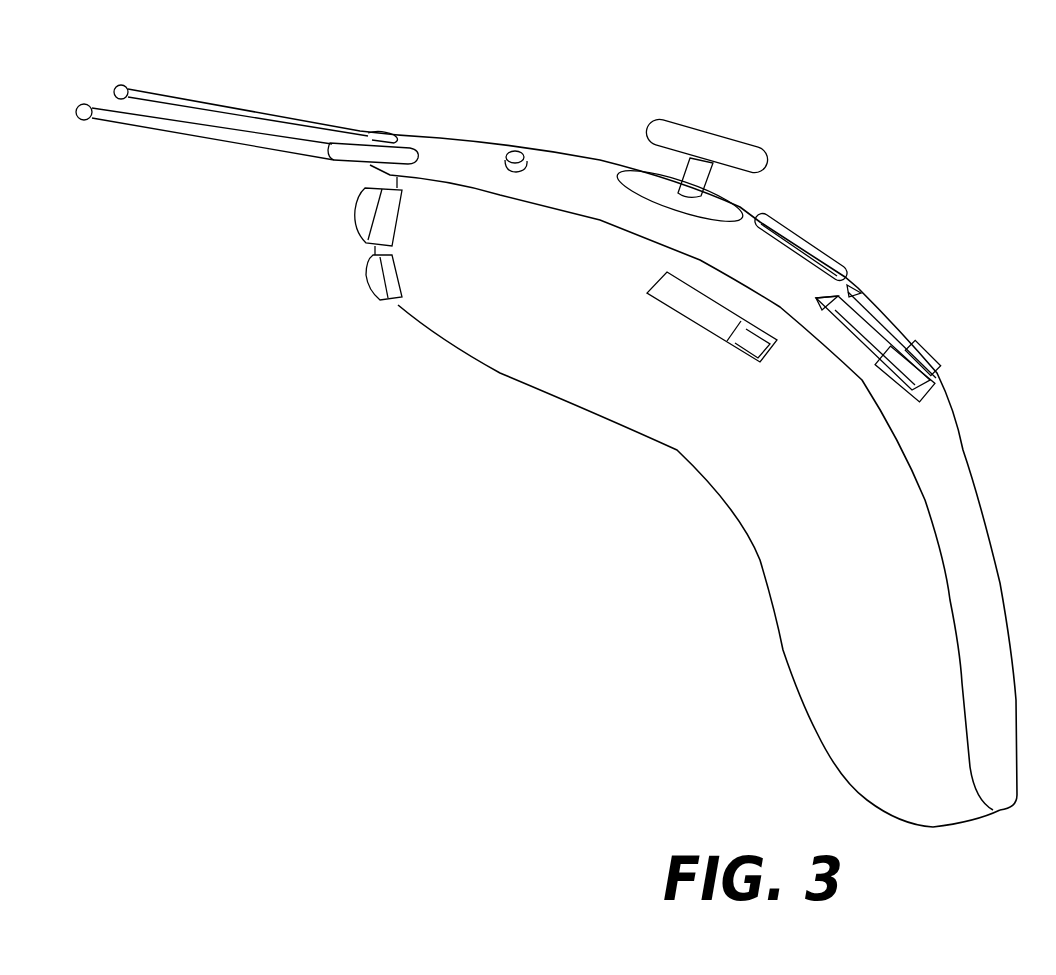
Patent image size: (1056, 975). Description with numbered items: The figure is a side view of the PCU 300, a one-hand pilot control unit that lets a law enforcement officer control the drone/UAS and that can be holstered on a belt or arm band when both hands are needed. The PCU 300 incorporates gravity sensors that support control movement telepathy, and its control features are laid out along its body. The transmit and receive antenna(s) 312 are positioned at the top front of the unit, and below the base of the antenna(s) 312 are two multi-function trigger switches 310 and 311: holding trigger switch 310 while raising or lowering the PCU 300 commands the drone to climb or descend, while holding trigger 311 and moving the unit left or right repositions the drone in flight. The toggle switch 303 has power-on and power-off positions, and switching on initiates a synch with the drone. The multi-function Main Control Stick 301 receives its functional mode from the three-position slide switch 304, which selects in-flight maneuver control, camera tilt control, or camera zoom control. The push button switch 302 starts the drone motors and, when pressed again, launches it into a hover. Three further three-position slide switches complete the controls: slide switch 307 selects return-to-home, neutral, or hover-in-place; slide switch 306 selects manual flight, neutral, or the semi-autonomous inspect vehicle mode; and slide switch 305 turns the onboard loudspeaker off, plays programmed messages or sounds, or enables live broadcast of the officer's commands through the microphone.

The PCU 300 is at (972, 108).
The Main Control Stick (MCS) 301 is at (718, 130).
The push button switch 302 is at (815, 232).
The toggle switch 303 is at (518, 148).
The three-position slide switch 304 is at (742, 352).
The slide switch 305 is at (860, 273).
The slide switch 306 is at (930, 353).
The slide switch 307 is at (927, 400).
The multi-function trigger switch 310 is at (357, 203).
The multi-function trigger switch 311 is at (366, 278).
The transmit and receive antenna(s) 312 is at (180, 121).